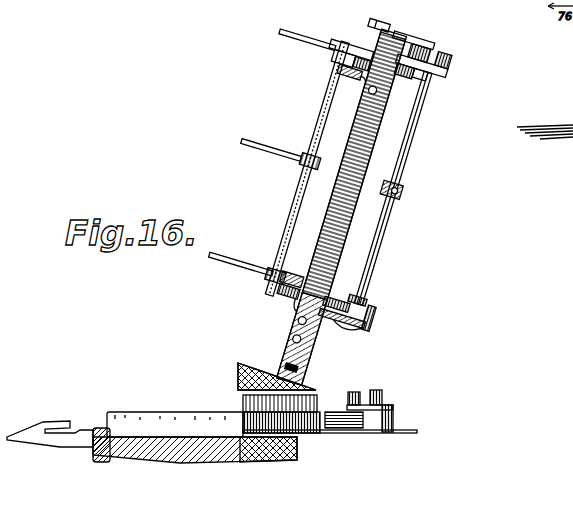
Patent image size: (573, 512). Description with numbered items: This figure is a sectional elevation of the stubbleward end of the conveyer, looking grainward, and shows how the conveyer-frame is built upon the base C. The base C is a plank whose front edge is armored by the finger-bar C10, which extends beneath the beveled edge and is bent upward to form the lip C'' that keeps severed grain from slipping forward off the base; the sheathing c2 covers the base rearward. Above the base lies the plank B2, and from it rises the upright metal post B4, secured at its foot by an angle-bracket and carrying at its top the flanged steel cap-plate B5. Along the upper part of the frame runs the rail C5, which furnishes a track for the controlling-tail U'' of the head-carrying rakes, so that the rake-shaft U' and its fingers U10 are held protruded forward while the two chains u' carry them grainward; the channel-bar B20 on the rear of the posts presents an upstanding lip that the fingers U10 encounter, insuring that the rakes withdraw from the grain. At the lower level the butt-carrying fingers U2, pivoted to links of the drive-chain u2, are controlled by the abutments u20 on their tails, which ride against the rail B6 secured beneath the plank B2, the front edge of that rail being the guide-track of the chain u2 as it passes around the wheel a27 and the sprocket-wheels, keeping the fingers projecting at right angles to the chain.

The controlling-tail U'' is at (375, 43).
The rail C5 is at (373, 28).
The cap-plate B5 is at (410, 36).
The chains u' is at (339, 190).
The head-carrying rake-shaft U' is at (349, 181).
The fingers U10 is at (278, 150).
The upright metal post B4 is at (386, 189).
The channel-bar B20 is at (375, 325).
The plank B2 is at (245, 367).
The rail B6 is at (246, 396).
The butt-carrying fingers U2 is at (162, 427).
The lip C'' is at (96, 428).
The finger-bar C10 is at (127, 462).
The base C is at (262, 460).
The wheel a27 is at (305, 433).
The drive-chain u2 is at (333, 407).
The abutments u20 is at (376, 392).
The sheathing c2 is at (363, 433).